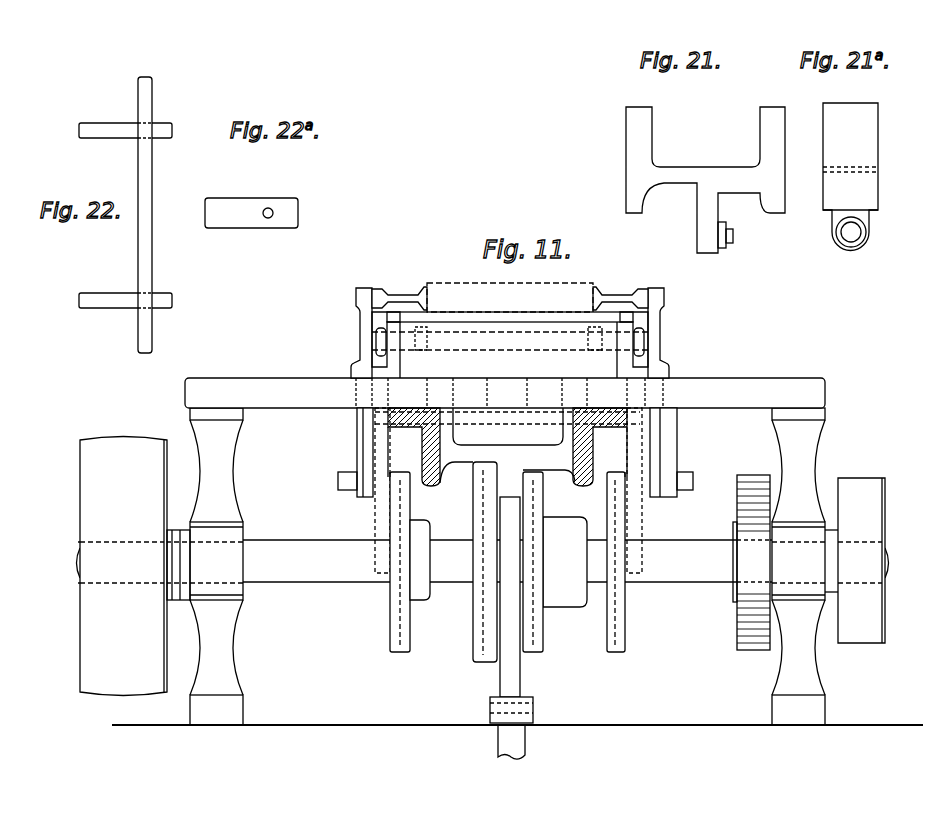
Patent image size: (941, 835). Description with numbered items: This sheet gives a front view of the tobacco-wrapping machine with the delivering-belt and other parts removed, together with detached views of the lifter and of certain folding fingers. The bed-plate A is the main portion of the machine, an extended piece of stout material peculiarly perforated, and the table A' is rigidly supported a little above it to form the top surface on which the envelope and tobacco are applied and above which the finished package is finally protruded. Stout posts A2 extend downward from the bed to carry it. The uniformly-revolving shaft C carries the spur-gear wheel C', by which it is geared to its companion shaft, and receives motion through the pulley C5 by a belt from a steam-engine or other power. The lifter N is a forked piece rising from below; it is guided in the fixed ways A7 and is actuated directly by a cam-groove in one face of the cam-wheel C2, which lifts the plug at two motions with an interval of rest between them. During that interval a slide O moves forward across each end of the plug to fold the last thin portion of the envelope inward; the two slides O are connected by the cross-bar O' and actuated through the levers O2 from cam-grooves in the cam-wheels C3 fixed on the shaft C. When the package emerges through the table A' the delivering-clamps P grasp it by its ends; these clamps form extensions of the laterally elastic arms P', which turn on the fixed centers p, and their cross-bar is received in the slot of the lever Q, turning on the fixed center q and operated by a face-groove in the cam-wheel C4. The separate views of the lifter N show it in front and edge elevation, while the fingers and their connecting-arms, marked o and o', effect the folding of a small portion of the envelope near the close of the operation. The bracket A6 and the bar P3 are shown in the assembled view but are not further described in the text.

In FIG. 22, the pin bar o is at (125, 215).
In FIG. 22A, the pin bar o is at (251, 213).
In FIG. 22, the rod o' is at (151, 215).
In FIG. 22A, the rod o' is at (275, 208).
In FIG. 21, the lifter N is at (705, 180).
In FIG. 21A, the lifter N is at (850, 177).
In FIG. 11, the lifter N is at (507, 445).
In FIG. 11, the bed-plate A is at (505, 393).
In FIG. 11, the table A' is at (510, 344).
In FIG. 11, the posts A2 is at (507, 566).
In FIG. 11, the bracket A6 is at (510, 339).
In FIG. 11, the fixed ways A7 is at (507, 447).
In FIG. 11, the shaft C is at (483, 561).
In FIG. 11, the spur-gear wheel C' is at (751, 562).
In FIG. 11, the cam-wheel C2 is at (534, 562).
In FIG. 11, the cam-wheels C3 is at (507, 562).
In FIG. 11, the cam-wheel C4 is at (481, 562).
In FIG. 11, the pulley C5 is at (482, 566).
In FIG. 11, the slide O is at (508, 338).
In FIG. 11, the cross-bar O' is at (510, 336).
In FIG. 11, the levers O2 is at (506, 468).
In FIG. 11, the delivering-clamps P is at (510, 291).
In FIG. 11, the arms P' is at (507, 333).
In FIG. 11, the hidden bar P3 is at (507, 417).
In FIG. 11, the lever Q is at (510, 597).
In FIG. 11, the fixed center q is at (511, 728).
In FIG. 11, the fixed centers p is at (515, 490).